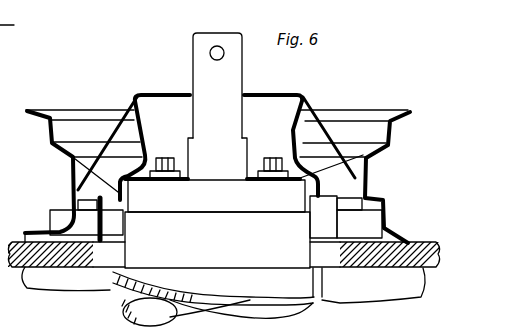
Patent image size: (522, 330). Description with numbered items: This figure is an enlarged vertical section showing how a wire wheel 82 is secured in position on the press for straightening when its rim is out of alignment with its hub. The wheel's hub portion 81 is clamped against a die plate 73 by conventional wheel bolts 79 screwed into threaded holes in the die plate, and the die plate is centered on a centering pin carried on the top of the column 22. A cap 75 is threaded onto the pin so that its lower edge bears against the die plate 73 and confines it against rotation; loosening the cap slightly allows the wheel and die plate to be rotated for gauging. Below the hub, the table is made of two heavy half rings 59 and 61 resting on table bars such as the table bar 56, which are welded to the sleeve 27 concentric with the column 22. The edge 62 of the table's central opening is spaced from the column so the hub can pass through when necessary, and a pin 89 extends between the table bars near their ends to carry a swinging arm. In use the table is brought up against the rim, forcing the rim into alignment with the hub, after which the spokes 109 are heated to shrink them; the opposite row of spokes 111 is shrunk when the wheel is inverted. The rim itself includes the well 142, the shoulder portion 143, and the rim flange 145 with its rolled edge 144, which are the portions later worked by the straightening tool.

The column 22 is at (217, 240).
The sleeve 27 is at (213, 295).
The table bar 56 is at (223, 285).
The half ring 59 is at (420, 242).
The half ring 61 is at (21, 265).
The edge of the opening 62 is at (323, 299).
The die plate 73 is at (216, 196).
The cap 75 is at (239, 45).
The wheel bolt 79 is at (273, 157).
The hub portion 81 is at (174, 178).
The wheel 82 is at (61, 99).
The pin 89 is at (12, 196).
The spokes 109 is at (110, 140).
The opposite row of spokes 111 is at (73, 188).
The well 142 is at (366, 181).
The shoulder portion 143 is at (386, 140).
The rolled edge 144 is at (420, 100).
The rim flange 145 is at (401, 120).